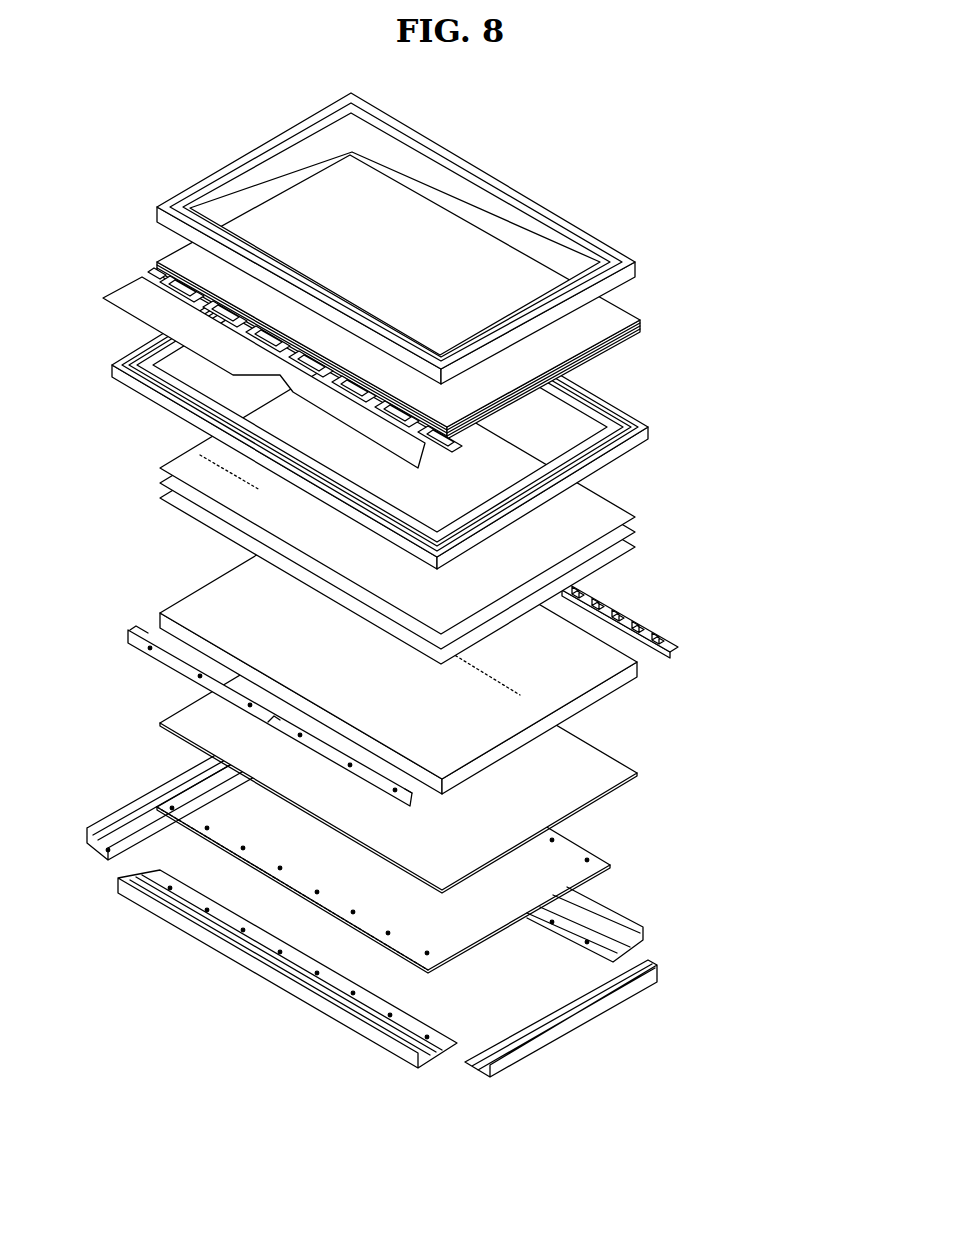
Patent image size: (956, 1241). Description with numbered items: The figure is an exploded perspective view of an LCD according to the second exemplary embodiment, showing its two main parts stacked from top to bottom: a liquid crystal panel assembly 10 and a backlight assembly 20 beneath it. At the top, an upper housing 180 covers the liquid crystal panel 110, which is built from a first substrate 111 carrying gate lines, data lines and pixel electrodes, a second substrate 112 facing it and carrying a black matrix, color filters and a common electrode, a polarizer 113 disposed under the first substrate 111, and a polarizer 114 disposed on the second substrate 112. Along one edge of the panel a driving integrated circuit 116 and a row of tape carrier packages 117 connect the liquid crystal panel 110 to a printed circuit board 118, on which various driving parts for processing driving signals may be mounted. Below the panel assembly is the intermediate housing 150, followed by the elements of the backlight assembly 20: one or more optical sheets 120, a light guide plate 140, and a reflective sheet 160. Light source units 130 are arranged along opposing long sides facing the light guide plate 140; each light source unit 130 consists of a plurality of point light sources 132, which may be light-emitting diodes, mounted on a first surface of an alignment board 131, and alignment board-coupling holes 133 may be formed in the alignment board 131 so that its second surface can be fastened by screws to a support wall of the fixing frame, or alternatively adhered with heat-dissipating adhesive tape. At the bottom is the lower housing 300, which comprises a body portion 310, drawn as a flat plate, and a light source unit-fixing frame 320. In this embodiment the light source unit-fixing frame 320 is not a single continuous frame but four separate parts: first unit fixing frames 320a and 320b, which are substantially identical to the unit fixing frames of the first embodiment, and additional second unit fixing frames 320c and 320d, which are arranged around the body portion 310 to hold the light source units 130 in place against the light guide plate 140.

The liquid crystal panel assembly 10 is at (451, 280).
The backlight assembly 20 is at (451, 585).
The liquid crystal panel 110 is at (458, 297).
The first substrate 111 is at (636, 325).
The second substrate 112 is at (622, 312).
The polarizer 113 is at (622, 333).
The polarizer 114 is at (608, 298).
The driving integrated circuit 116 is at (602, 356).
The tape carrier package 117 is at (162, 278).
The printed circuit board 118 is at (137, 296).
The optical sheets 120 is at (154, 458).
The light source unit 130 is at (674, 621).
The alignment board 131 is at (660, 636).
The point light sources 132 is at (655, 621).
The alignment board-coupling holes 133 is at (146, 640).
The light guide plate 140 is at (610, 665).
The intermediate housing 150 is at (660, 414).
The reflective sheet 160 is at (602, 764).
The upper housing 180 is at (618, 240).
The lower housing 300 is at (430, 889).
The body portion 310 is at (604, 833).
The light source unit-fixing frame 320 is at (408, 910).
The first unit fixing frame 320a is at (615, 904).
The first unit fixing frame 320b is at (223, 950).
The second unit fixing frame 320c is at (118, 827).
The second unit fixing frame 320d is at (587, 1012).